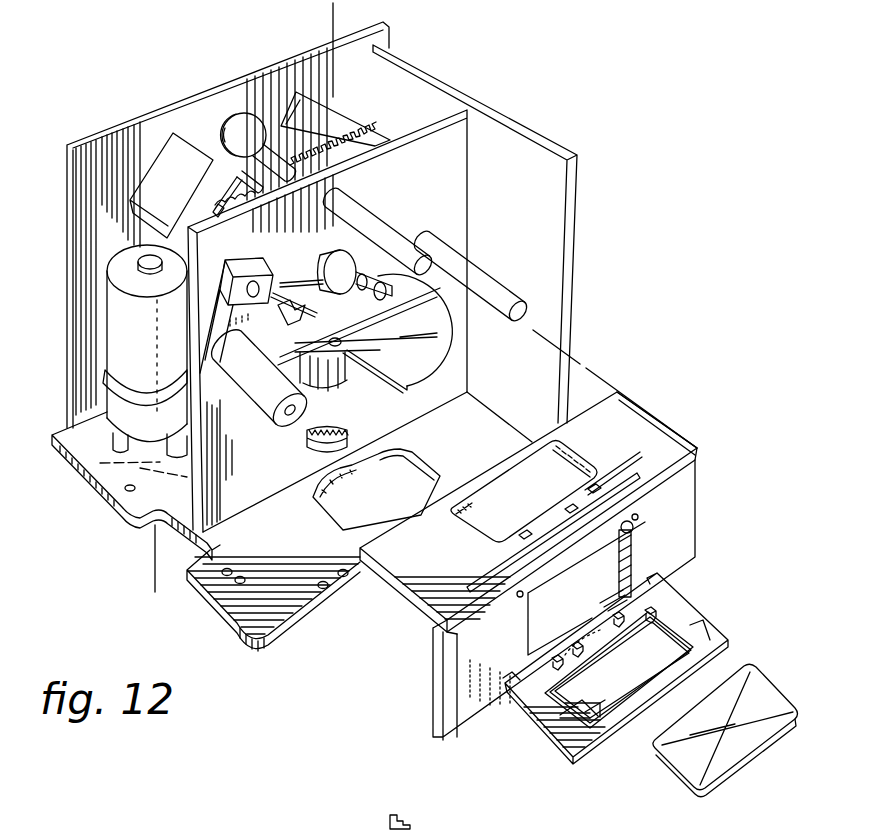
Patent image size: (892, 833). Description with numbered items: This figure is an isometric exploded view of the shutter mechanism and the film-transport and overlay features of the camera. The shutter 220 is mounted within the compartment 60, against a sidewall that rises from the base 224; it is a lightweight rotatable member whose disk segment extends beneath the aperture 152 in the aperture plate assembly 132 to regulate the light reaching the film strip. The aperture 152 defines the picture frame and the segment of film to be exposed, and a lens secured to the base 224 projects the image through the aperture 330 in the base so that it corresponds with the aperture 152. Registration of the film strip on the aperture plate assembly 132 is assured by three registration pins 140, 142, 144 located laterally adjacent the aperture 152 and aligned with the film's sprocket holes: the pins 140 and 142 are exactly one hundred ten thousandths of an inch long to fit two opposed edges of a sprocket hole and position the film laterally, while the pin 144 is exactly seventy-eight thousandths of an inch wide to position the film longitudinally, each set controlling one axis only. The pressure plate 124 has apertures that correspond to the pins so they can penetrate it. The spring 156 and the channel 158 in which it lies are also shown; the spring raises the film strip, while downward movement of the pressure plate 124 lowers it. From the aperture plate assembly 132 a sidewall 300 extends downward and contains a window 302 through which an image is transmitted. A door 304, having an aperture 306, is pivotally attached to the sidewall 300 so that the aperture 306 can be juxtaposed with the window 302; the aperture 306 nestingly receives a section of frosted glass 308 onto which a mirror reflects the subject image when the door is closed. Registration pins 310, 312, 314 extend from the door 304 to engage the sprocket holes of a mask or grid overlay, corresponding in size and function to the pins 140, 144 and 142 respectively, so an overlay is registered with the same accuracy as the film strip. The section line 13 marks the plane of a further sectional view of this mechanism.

The section line 13- 13 is at (333, 3).
The compartment 60 is at (469, 90).
The pressure plate 124 is at (462, 265).
The aperture plate assembly 132 is at (650, 425).
The registration pin 140 is at (524, 533).
The registration pin 142 is at (567, 507).
The registration pin 144 is at (597, 486).
The aperture 152 is at (620, 400).
The spring 156 is at (670, 453).
The channel 158 is at (500, 607).
The shutter 220 is at (443, 335).
The base 224 is at (277, 600).
The sidewall 300 is at (683, 508).
The window 302 is at (626, 567).
The door 304 is at (681, 607).
The aperture 306 is at (577, 708).
The frosted glass 308 is at (677, 758).
The registration pin 310 is at (652, 612).
The registration pin 312 is at (520, 681).
The registration pin 314 is at (579, 648).
The aperture 330 is at (413, 470).